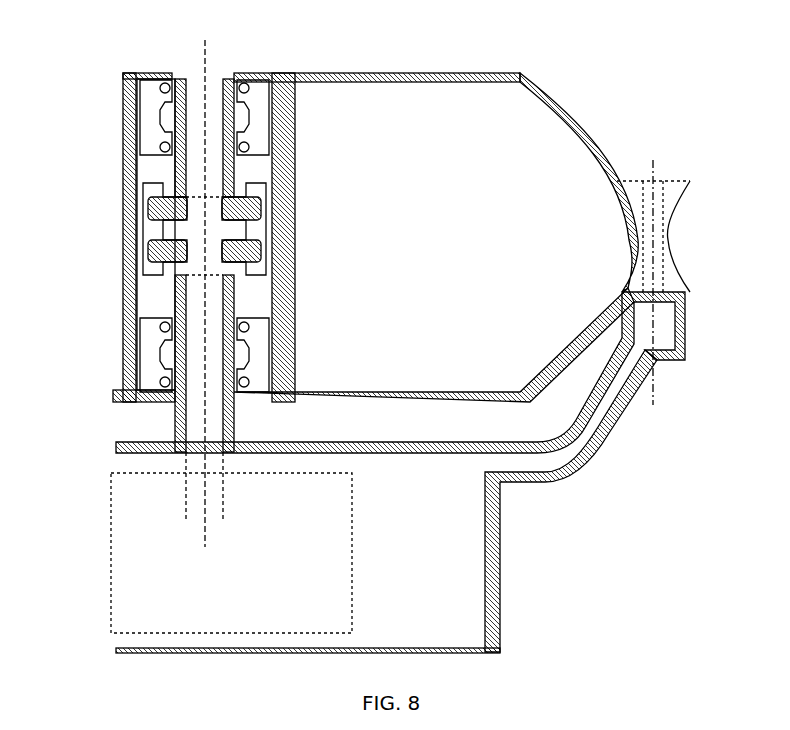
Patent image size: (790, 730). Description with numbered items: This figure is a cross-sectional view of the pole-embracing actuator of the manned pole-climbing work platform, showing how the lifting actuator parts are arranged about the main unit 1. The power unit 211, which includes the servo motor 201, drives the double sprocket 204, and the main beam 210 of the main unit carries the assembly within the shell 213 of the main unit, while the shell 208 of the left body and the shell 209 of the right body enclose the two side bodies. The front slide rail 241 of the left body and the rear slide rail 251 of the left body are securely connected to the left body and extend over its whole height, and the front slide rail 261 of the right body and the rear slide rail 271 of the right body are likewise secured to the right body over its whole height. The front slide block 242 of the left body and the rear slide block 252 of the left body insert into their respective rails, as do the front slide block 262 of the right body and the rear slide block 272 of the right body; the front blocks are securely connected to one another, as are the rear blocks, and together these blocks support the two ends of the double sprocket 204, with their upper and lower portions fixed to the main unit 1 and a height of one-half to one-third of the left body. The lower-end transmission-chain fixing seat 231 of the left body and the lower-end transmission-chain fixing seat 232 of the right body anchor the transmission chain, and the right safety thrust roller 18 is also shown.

The main unit 1 is at (422, 517).
The right safety thrust roller 18 is at (664, 180).
The servo motor 201 is at (203, 128).
The double sprocket 204 is at (153, 247).
The shell of the left body 208 is at (150, 390).
The shell of the right body 209 is at (442, 73).
The main beam of the main unit 210 is at (150, 172).
The power unit 211 is at (172, 547).
The shell of the main unit 213 is at (172, 418).
The lower-end transmission-chain fixing seat of the left body 231 is at (160, 200).
The lower-end transmission-chain fixing seat of the right body 232 is at (292, 135).
The front slide rail of the left body 241 is at (124, 78).
The front slide block of the left body 242 is at (147, 80).
The rear slide rail of the left body 251 is at (150, 352).
The rear slide block of the left body 252 is at (152, 330).
The front slide rail of the right body 261 is at (252, 117).
The front slide block of the right body 262 is at (256, 90).
The rear slide rail of the right body 271 is at (293, 305).
The rear slide block of the right body 272 is at (292, 348).